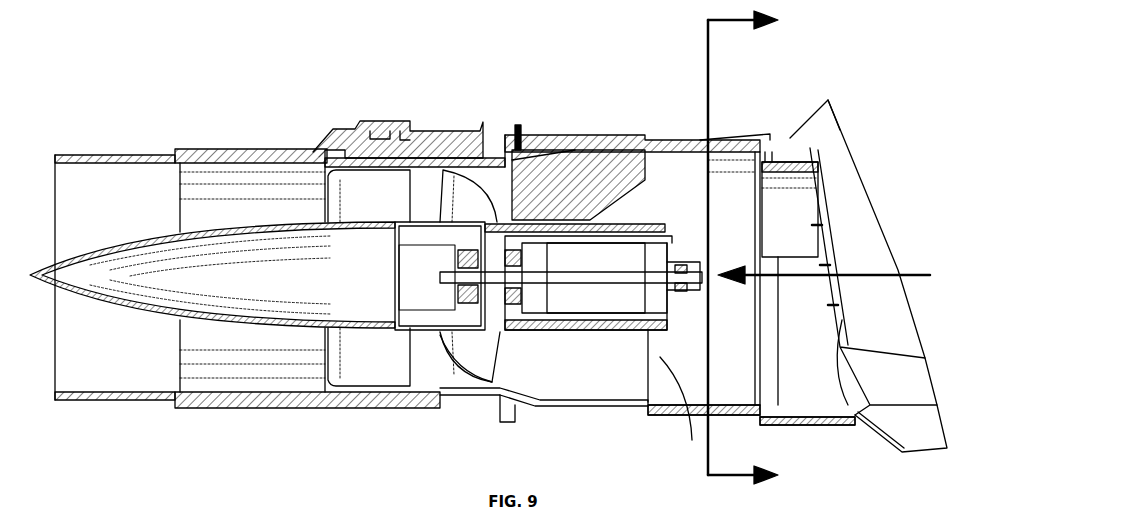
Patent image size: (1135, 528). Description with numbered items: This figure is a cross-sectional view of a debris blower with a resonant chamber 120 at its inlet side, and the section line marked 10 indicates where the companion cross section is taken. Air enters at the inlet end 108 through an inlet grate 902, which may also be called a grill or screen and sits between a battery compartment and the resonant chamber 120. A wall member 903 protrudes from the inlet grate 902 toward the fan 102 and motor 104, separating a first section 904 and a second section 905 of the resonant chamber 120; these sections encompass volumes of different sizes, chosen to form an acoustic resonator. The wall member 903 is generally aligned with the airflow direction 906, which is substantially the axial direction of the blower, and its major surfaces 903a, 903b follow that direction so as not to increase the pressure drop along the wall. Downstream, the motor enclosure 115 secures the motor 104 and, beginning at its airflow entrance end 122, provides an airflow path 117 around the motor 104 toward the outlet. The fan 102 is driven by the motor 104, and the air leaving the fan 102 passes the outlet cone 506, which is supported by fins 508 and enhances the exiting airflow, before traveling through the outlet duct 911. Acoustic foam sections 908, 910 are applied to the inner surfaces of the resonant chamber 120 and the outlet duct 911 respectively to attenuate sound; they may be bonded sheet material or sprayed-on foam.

The outlet duct 911 is at (188, 404).
The acoustic foam section 910 is at (246, 408).
The outlet cone 506 is at (120, 310).
The fins 508 is at (352, 190).
The motor 104 is at (581, 286).
The motor enclosure 115 is at (527, 192).
The resonant chamber 120 is at (790, 120).
The airflow path 117 is at (553, 369).
The acoustic foam section 908 is at (660, 410).
The fan 102 is at (490, 360).
The airflow entrance end 122 is at (660, 357).
The second section 905 is at (719, 246).
The major surface 903b is at (772, 246).
The major surface 903a is at (783, 138).
The wall member 903 is at (808, 198).
The first section 904 is at (781, 320).
The inlet end 108 is at (875, 250).
The inlet grate 902 is at (842, 320).
The airflow direction 906 is at (917, 273).
The section line 10- 10 is at (757, 249).